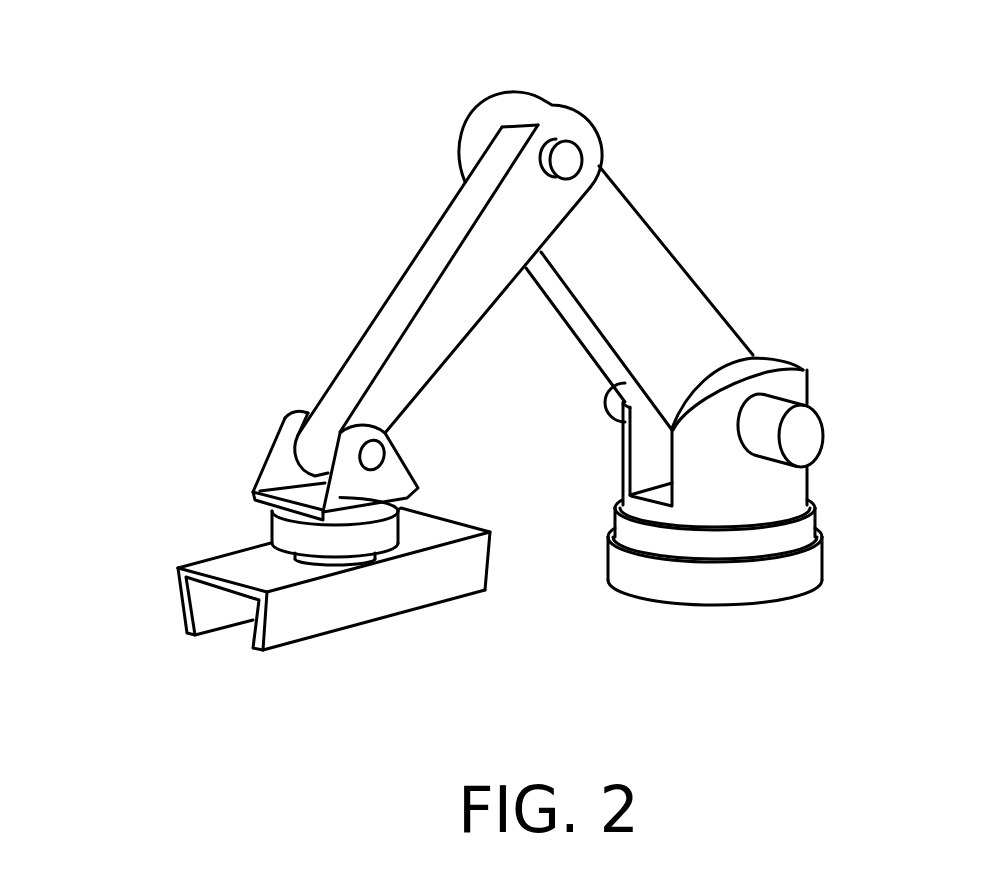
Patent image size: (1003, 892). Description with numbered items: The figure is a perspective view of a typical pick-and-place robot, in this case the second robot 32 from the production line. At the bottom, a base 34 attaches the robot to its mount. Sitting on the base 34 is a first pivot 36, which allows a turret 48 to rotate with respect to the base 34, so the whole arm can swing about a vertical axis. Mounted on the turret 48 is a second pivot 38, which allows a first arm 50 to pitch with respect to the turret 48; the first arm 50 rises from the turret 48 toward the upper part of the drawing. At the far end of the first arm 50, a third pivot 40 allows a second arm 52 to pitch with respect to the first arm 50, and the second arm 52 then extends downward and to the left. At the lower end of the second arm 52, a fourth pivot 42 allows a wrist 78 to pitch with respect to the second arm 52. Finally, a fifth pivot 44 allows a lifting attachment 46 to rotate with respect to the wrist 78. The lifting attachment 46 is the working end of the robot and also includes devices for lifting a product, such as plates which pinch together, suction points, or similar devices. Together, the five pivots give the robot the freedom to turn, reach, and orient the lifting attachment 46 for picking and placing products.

The second robot 32 is at (185, 155).
The base 34 is at (713, 582).
The first pivot 36 is at (780, 540).
The second pivot 38 is at (805, 438).
The third pivot 40 is at (570, 157).
The fourth pivot 42 is at (368, 456).
The fifth pivot 44 is at (295, 535).
The lifting attachment 46 is at (360, 592).
The turret 48 is at (780, 380).
The first arm 50 is at (660, 268).
The second arm 52 is at (430, 270).
The wrist 78 is at (364, 501).